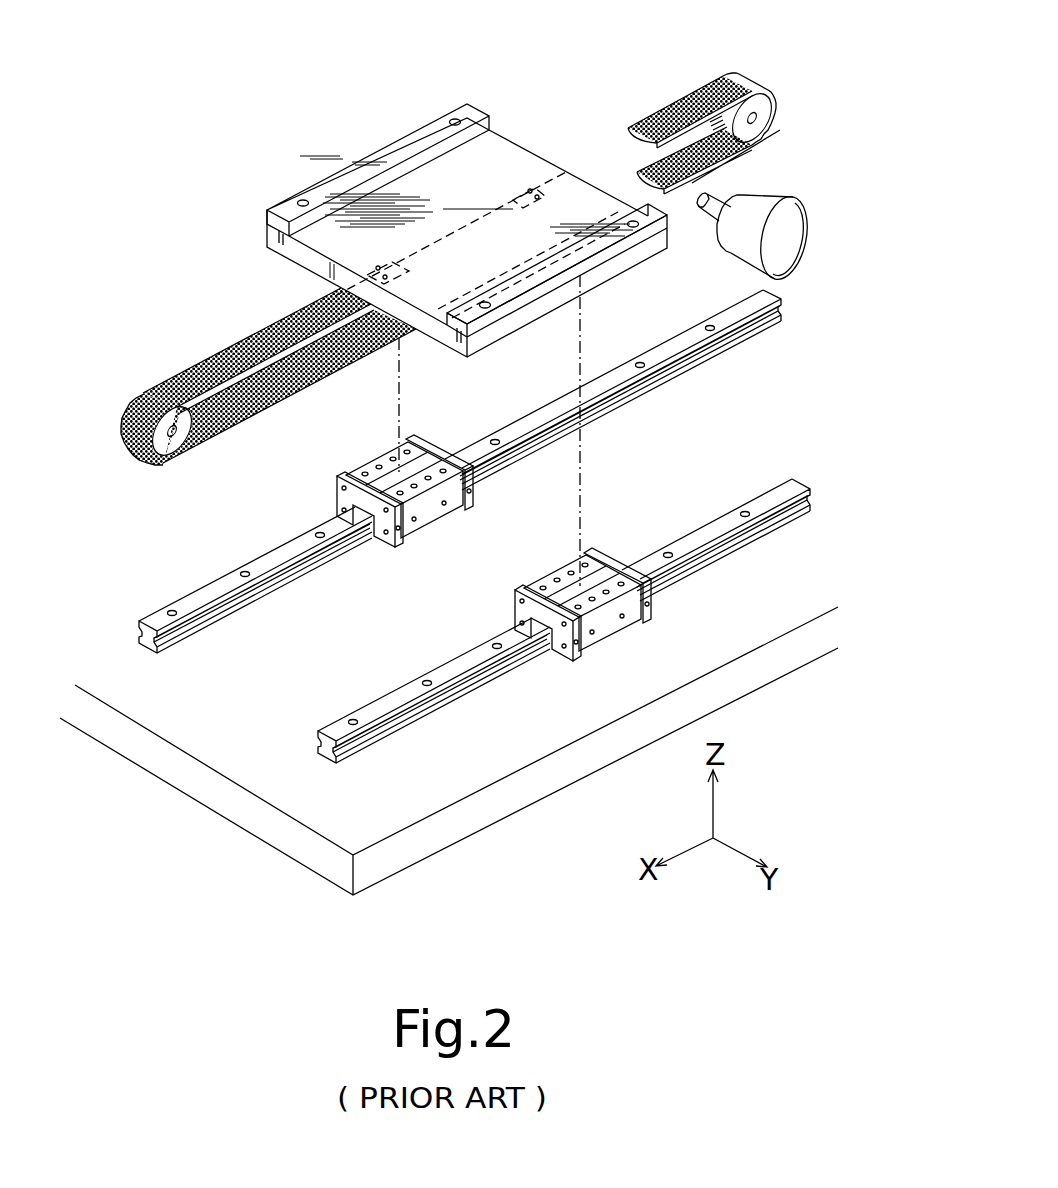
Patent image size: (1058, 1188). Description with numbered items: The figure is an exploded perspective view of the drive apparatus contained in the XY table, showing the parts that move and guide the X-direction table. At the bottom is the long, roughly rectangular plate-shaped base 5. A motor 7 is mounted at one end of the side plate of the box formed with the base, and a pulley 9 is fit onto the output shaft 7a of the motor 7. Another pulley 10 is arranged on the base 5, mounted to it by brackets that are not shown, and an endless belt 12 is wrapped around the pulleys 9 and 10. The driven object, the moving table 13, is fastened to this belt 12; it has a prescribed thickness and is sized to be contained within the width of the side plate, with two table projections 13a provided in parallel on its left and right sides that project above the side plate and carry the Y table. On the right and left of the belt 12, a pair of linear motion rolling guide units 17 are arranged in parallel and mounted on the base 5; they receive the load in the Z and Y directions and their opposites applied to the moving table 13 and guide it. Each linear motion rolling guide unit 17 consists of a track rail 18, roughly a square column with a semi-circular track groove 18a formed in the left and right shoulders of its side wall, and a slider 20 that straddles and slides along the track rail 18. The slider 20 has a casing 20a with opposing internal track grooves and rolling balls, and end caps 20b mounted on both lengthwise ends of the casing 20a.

The base 5 is at (462, 823).
The motor 7 is at (759, 231).
The output shaft 7a is at (704, 193).
The pulley 9 is at (752, 116).
The pulley 10 is at (172, 416).
The endless belt 12 is at (662, 118).
The moving table 13 is at (447, 319).
The table projections 13a is at (327, 192).
The linear motion rolling guide unit 17 is at (446, 548).
The track rail 18 is at (446, 548).
The track groove 18a is at (282, 572).
The slider 20 is at (542, 572).
The casing 20a is at (443, 507).
The end caps 20b is at (398, 530).